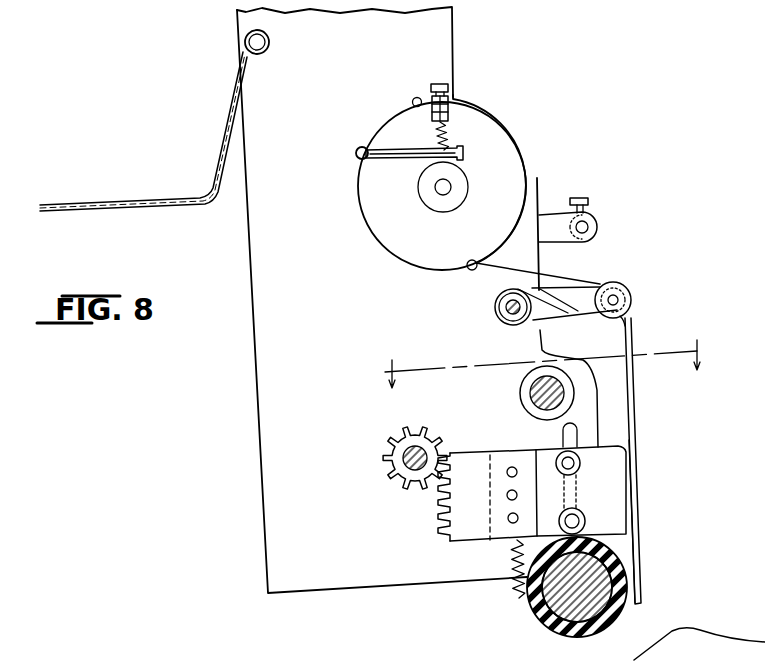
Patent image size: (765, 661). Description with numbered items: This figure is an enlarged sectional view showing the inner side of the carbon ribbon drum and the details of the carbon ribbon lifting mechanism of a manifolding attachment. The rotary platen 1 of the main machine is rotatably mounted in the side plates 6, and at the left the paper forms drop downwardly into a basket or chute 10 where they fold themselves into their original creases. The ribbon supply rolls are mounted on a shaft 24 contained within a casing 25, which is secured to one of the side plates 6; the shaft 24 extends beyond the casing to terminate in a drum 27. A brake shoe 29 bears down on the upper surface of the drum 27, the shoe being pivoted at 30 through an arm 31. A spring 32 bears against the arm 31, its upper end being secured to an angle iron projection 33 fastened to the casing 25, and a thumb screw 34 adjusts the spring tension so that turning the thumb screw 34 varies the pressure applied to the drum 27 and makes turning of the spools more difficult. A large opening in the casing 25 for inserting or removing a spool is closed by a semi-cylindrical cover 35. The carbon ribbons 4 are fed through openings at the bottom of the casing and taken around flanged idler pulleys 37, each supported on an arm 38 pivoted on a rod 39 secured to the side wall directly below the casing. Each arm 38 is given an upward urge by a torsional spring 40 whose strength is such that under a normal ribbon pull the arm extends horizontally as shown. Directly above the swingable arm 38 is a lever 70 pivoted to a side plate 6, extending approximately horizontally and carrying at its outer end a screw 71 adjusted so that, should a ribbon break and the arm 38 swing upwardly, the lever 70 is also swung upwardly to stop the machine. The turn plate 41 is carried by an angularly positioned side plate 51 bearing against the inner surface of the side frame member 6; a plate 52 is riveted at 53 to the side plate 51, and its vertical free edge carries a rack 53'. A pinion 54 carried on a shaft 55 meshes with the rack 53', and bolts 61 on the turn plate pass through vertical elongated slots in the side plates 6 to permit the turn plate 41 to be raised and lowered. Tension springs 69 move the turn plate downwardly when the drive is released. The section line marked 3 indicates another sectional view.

The rotary platen 1 is at (622, 617).
The section line 3 is at (541, 364).
The ribbons 4 is at (633, 343).
The side plates 6 is at (258, 328).
The basket or chute 10 is at (127, 203).
The shaft 24 is at (442, 191).
The casing 25 is at (416, 268).
The drum 27 is at (463, 197).
The brake shoe 29 is at (463, 156).
The pivot 30 is at (355, 156).
The arm 31 is at (385, 160).
The spring 32 is at (447, 126).
The angle iron projection 33 is at (448, 98).
The thumb screw 34 is at (447, 84).
The semi-cylindrical cover 35 is at (535, 184).
The idler pulleys 37 is at (630, 288).
The arms 38 is at (577, 312).
The rod 39 is at (507, 310).
The torsional spring 40 is at (530, 322).
The turn plate 41 is at (633, 489).
The side plate 51 is at (612, 467).
The plate 52 is at (466, 463).
The rivets 53 is at (502, 474).
The rack 53' is at (426, 502).
The pinion 54 is at (398, 478).
The shaft 55 is at (417, 448).
The bolts 61 is at (566, 455).
The tension springs 69 is at (512, 565).
The lever 70 is at (596, 221).
The screw 71 is at (588, 201).